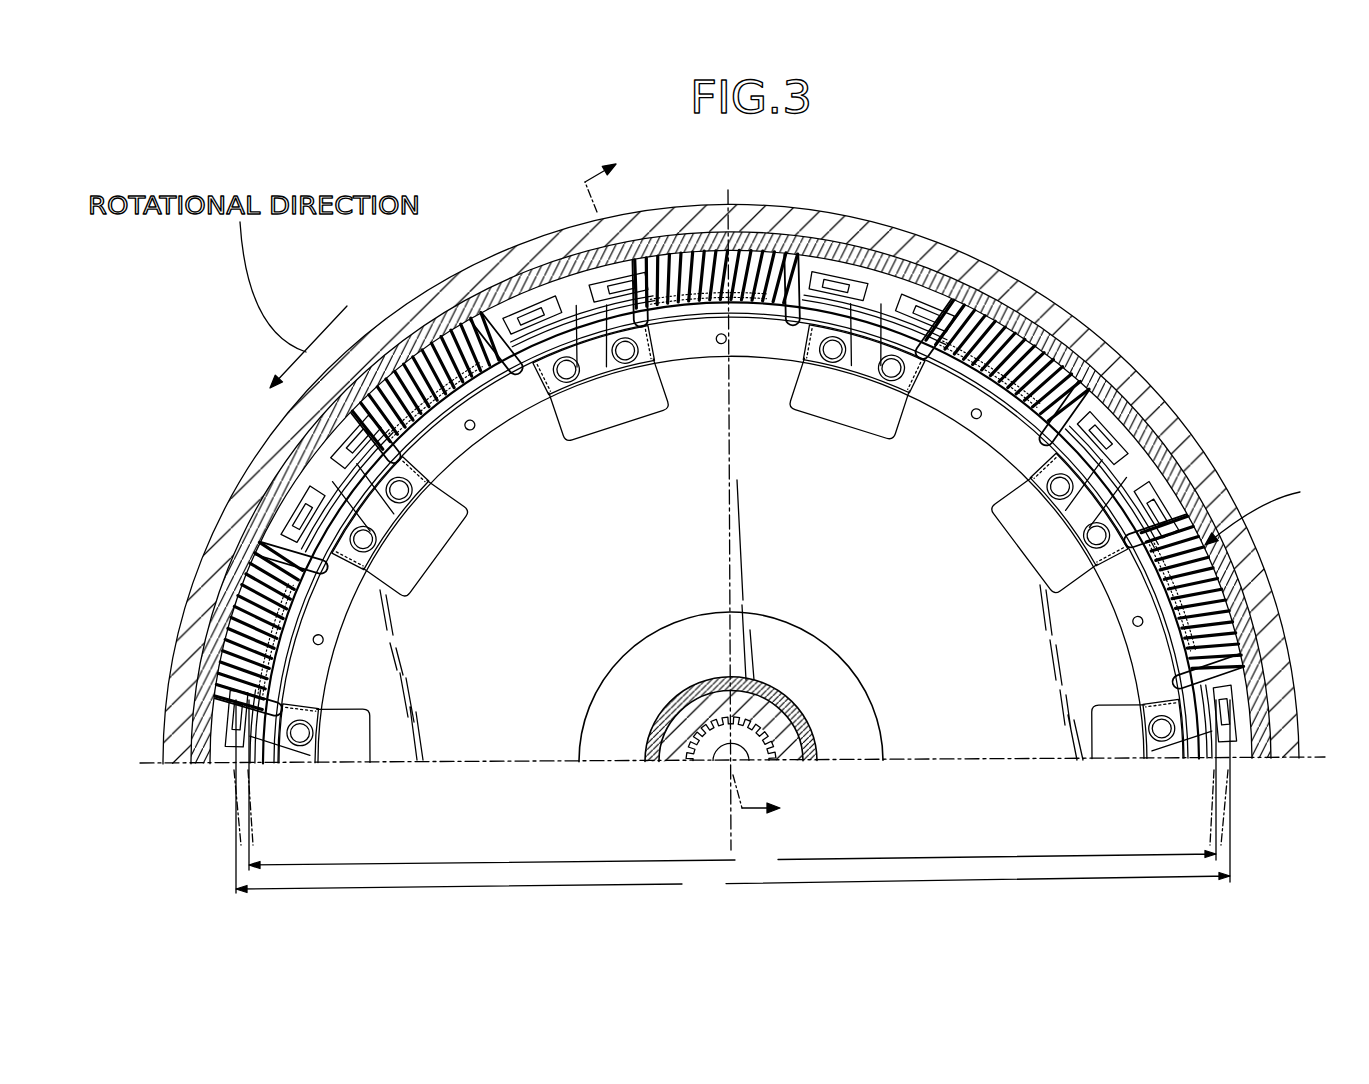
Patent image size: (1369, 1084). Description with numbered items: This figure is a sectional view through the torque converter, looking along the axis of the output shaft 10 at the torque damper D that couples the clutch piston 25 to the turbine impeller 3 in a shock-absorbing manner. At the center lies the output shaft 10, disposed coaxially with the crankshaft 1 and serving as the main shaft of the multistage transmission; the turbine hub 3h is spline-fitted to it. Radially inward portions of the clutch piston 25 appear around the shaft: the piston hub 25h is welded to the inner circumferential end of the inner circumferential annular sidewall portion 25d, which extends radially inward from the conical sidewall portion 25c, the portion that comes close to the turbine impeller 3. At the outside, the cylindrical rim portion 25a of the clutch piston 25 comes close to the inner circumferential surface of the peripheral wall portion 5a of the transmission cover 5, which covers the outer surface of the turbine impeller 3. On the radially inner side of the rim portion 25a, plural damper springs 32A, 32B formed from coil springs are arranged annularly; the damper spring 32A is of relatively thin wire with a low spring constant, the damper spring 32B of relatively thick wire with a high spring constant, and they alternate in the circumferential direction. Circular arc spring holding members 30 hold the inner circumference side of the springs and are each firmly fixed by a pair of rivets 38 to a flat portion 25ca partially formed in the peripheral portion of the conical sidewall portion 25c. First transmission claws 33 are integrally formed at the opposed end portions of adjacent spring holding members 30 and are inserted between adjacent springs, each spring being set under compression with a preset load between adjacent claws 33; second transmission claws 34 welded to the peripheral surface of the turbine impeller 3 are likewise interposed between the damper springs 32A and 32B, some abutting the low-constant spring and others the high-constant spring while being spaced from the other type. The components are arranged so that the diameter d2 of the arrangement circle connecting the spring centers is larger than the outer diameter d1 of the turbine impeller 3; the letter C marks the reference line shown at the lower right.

The crankshaft 1 is at (699, 483).
The turbine impeller 3 is at (1226, 828).
The turbine hub 3h is at (688, 712).
The transmission cover 5 is at (1196, 388).
The peripheral wall portion 5a is at (863, 230).
The output shaft 10 is at (700, 762).
The clutch piston 25 is at (963, 283).
The rim portion 25a is at (1000, 317).
The conical sidewall portion 25c is at (955, 738).
The flat portion 25ca is at (384, 525).
The inner circumferential annular sidewall portion 25d is at (846, 752).
The piston hub 25h is at (650, 762).
The spring holding member 30 is at (307, 679).
The damper spring 32A is at (1060, 345).
The damper spring 32B is at (700, 252).
The first transmission claw 33 is at (522, 298).
The second transmission claw 34 is at (834, 278).
The rivet 38 is at (563, 373).
The center line C is at (1238, 836).
The torque damper D is at (1267, 507).
The outer diameter of the turbine impeller d1 is at (732, 788).
The diameter of the annular arrangement circle d2 is at (733, 800).